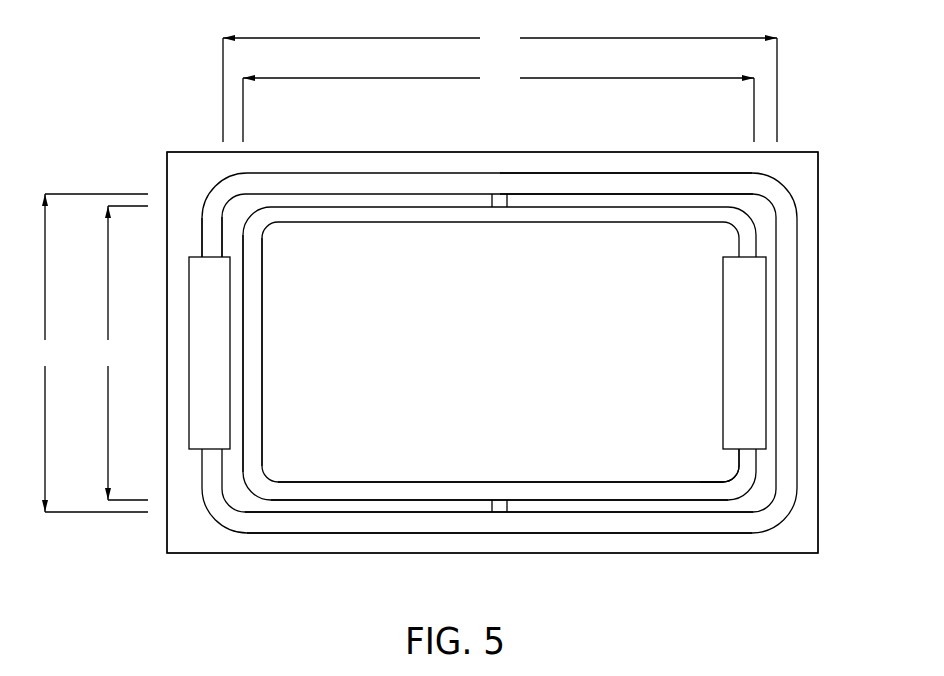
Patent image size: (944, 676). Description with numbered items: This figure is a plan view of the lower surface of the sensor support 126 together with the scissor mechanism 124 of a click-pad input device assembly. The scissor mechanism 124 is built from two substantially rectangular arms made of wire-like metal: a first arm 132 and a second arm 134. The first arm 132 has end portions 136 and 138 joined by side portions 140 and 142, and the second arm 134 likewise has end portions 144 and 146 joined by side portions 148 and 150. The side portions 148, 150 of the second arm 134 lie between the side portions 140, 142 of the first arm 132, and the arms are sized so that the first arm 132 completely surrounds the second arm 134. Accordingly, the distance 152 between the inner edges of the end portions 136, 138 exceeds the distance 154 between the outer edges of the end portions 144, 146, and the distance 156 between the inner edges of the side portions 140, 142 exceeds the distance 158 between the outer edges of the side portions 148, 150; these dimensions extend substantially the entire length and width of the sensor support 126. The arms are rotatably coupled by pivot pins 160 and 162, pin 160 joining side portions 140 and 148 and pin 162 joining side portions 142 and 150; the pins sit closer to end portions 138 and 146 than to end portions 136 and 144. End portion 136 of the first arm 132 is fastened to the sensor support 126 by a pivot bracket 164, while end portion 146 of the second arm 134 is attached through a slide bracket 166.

The scissor mechanism 124 is at (816, 221).
The sensor support 126 is at (808, 533).
The first arm 132 is at (783, 200).
The second arm 134 is at (262, 222).
The end portion 136 is at (212, 238).
The end portion 138 is at (787, 256).
The side portion 140 is at (567, 185).
The side portion 142 is at (432, 523).
The end portion 144 is at (252, 408).
The end portion 146 is at (742, 458).
The side portion 148 is at (393, 217).
The side portion 150 is at (417, 490).
The distance 152 is at (500, 84).
The distance 154 is at (498, 104).
The distance 156 is at (88, 353).
The distance 158 is at (119, 353).
The pivot pin 160 is at (498, 208).
The pivot pin 162 is at (500, 498).
The pivot bracket 164 is at (190, 437).
The slide bracket 166 is at (760, 385).